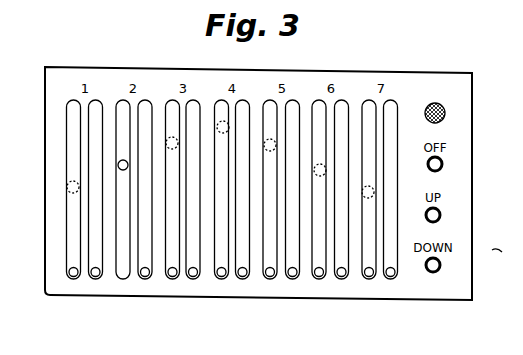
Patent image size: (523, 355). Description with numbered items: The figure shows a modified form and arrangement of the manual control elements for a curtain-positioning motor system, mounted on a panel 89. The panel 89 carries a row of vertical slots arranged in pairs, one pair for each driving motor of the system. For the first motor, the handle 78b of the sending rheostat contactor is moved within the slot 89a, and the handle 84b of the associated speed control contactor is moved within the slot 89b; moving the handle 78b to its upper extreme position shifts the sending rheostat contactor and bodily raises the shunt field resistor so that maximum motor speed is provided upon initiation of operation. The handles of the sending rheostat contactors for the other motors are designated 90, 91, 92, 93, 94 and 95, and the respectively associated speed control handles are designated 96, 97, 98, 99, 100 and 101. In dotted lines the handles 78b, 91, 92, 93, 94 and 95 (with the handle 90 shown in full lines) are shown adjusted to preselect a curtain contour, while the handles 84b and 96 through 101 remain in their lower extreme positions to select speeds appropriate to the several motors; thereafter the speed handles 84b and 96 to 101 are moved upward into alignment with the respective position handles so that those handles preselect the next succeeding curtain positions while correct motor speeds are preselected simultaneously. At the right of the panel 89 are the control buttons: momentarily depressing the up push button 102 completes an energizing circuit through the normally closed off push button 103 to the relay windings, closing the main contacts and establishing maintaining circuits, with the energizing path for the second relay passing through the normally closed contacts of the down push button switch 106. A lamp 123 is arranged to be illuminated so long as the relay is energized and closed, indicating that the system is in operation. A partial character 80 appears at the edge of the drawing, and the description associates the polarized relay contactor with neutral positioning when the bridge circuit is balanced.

The control panel support 80 is at (507, 260).
The panel 89 is at (108, 75).
The slot 89a is at (72, 100).
The slot 89b is at (98, 102).
The handle 78b is at (74, 277).
The handle 84b is at (96, 277).
The handle 90 is at (120, 169).
The handle 91 is at (172, 277).
The handle 92 is at (222, 277).
The handle 93 is at (270, 277).
The handle 94 is at (319, 277).
The handle 95 is at (369, 277).
The handle 96 is at (145, 277).
The handle 97 is at (193, 277).
The handle 98 is at (242, 277).
The handle 99 is at (292, 277).
The handle 100 is at (342, 277).
The handle 101 is at (390, 277).
The up push button 102 is at (441, 213).
The off push button 103 is at (443, 162).
The down push button switch 106 is at (433, 273).
The lamp 123 is at (445, 113).